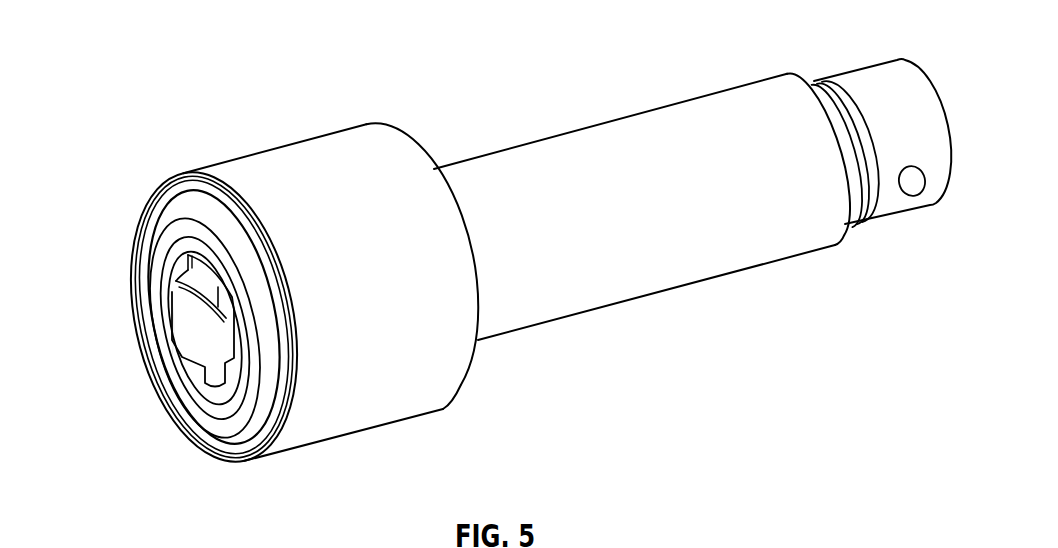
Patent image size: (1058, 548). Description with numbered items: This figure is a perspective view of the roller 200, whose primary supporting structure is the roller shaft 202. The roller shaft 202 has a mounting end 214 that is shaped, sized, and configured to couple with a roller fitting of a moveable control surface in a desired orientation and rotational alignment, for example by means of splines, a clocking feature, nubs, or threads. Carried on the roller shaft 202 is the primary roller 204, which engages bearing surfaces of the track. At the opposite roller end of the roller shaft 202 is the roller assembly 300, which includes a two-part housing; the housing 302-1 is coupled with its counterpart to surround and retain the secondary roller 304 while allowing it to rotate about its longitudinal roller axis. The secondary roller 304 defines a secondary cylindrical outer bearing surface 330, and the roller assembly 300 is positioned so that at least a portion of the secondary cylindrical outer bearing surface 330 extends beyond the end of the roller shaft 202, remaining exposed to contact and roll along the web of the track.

The roller 200 is at (528, 257).
The roller shaft 202 is at (693, 285).
The primary roller 204 is at (343, 438).
The mounting end 214 is at (730, 81).
The roller assembly 300 is at (208, 346).
The housing 302-1 is at (215, 277).
The secondary roller 304 is at (185, 312).
The secondary cylindrical outer bearing surface 330 is at (210, 343).